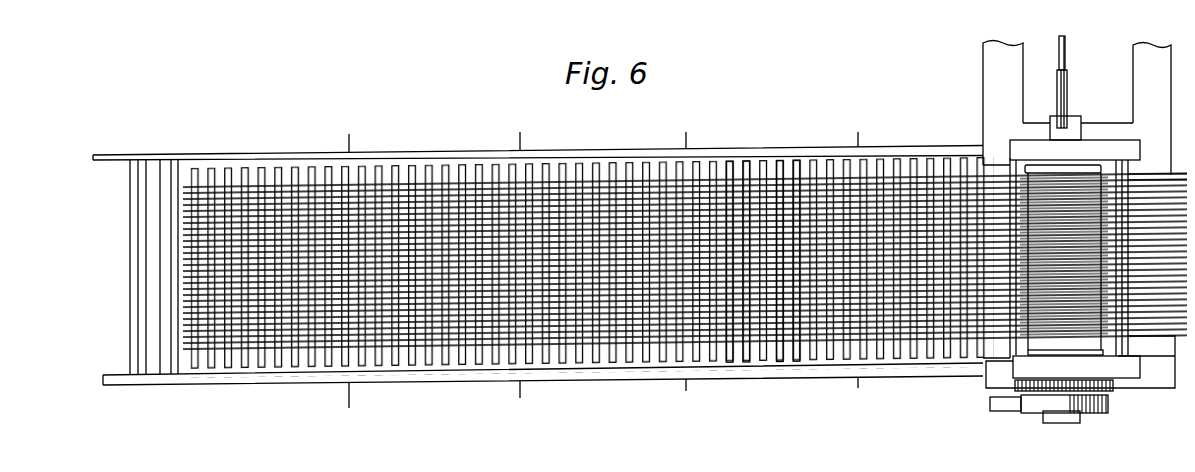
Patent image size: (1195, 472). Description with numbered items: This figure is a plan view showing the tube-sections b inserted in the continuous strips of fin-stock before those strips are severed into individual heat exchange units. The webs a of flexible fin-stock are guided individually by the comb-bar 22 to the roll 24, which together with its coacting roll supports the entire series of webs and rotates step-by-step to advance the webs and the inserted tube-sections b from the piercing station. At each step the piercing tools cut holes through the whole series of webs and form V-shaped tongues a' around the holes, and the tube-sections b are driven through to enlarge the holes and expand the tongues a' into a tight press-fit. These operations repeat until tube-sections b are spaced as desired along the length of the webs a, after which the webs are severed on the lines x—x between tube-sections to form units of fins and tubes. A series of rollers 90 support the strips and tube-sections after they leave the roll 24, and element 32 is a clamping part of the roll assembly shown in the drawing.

The rollers 90 is at (160, 341).
The severing lines x is at (603, 270).
The tube-sections b is at (737, 151).
The webs of fin-stock a is at (973, 269).
The tongues a' is at (1151, 152).
The clamping bars 32 is at (1096, 135).
The roll 24 is at (1066, 334).
The comb-bar 22 is at (1012, 334).